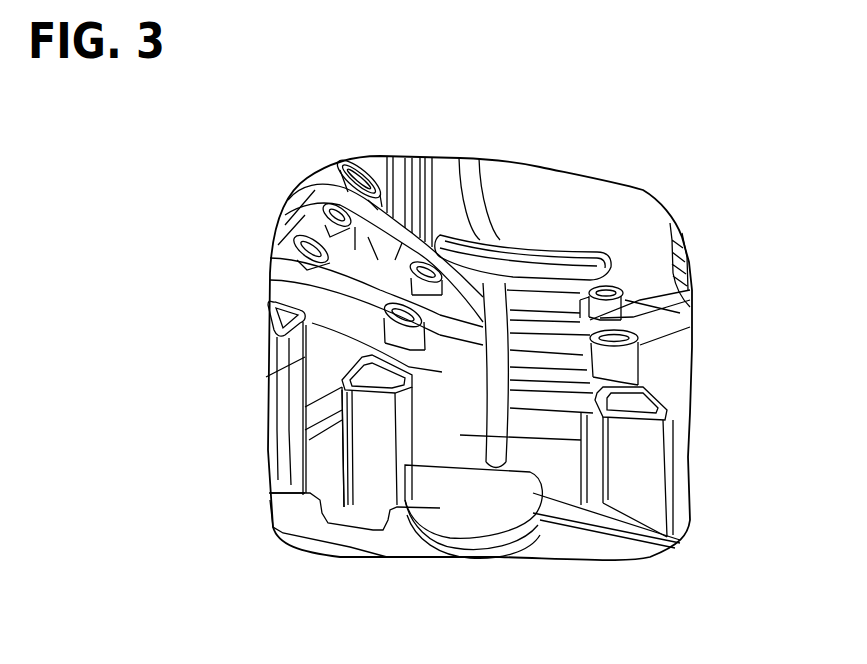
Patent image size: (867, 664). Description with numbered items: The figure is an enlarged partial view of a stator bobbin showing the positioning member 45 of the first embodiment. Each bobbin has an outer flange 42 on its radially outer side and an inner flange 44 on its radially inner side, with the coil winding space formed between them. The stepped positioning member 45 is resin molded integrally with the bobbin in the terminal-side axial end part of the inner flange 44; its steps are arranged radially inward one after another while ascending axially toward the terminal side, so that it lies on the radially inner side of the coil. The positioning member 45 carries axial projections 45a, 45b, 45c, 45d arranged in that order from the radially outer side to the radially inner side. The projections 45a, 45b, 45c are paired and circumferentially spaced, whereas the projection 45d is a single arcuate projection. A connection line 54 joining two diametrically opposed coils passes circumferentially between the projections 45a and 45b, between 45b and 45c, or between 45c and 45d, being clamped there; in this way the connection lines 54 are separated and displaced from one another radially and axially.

The outer flange 42 is at (620, 553).
The inner flange 44 is at (292, 467).
The positioning member 45 is at (375, 160).
The axial projection 45a is at (283, 315).
The axial projection 45b is at (275, 272).
The axial projection 45c is at (315, 166).
The arcuate projection 45d is at (357, 157).
The connection line 54 is at (300, 214).